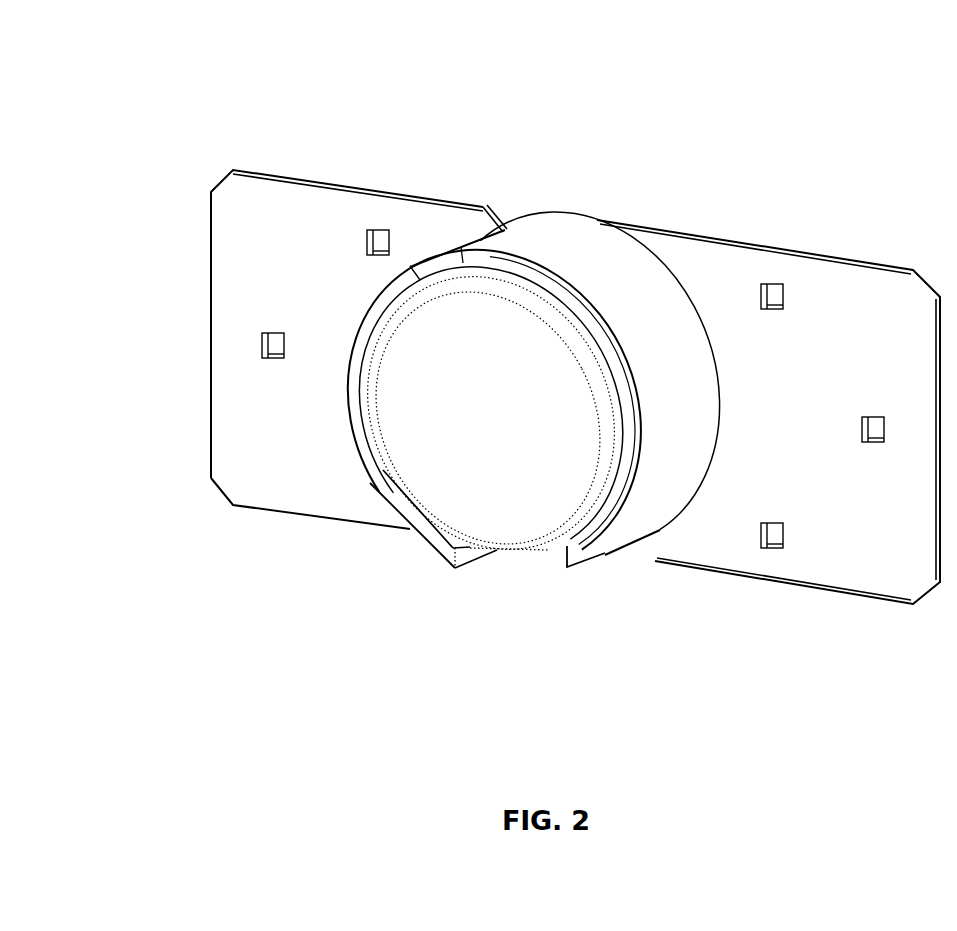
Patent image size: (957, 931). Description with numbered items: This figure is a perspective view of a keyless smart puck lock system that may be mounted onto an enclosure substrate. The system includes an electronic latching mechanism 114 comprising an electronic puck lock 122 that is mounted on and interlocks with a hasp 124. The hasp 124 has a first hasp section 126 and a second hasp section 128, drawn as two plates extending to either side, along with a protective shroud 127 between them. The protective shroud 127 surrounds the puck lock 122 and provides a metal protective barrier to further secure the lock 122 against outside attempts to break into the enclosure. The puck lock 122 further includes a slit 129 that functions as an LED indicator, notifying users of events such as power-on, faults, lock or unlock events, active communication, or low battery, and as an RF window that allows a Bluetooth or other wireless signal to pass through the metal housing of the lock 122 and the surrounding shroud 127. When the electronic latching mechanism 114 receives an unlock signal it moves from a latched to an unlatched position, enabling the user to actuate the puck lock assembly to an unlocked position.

The electronic latching mechanism 114 is at (370, 125).
The second hasp section 128 is at (291, 195).
The first hasp section 126 is at (902, 262).
The protective shroud 127 is at (572, 240).
The electronic puck lock 122 is at (457, 425).
The slit 129 is at (540, 461).
The hasp 124 is at (922, 670).